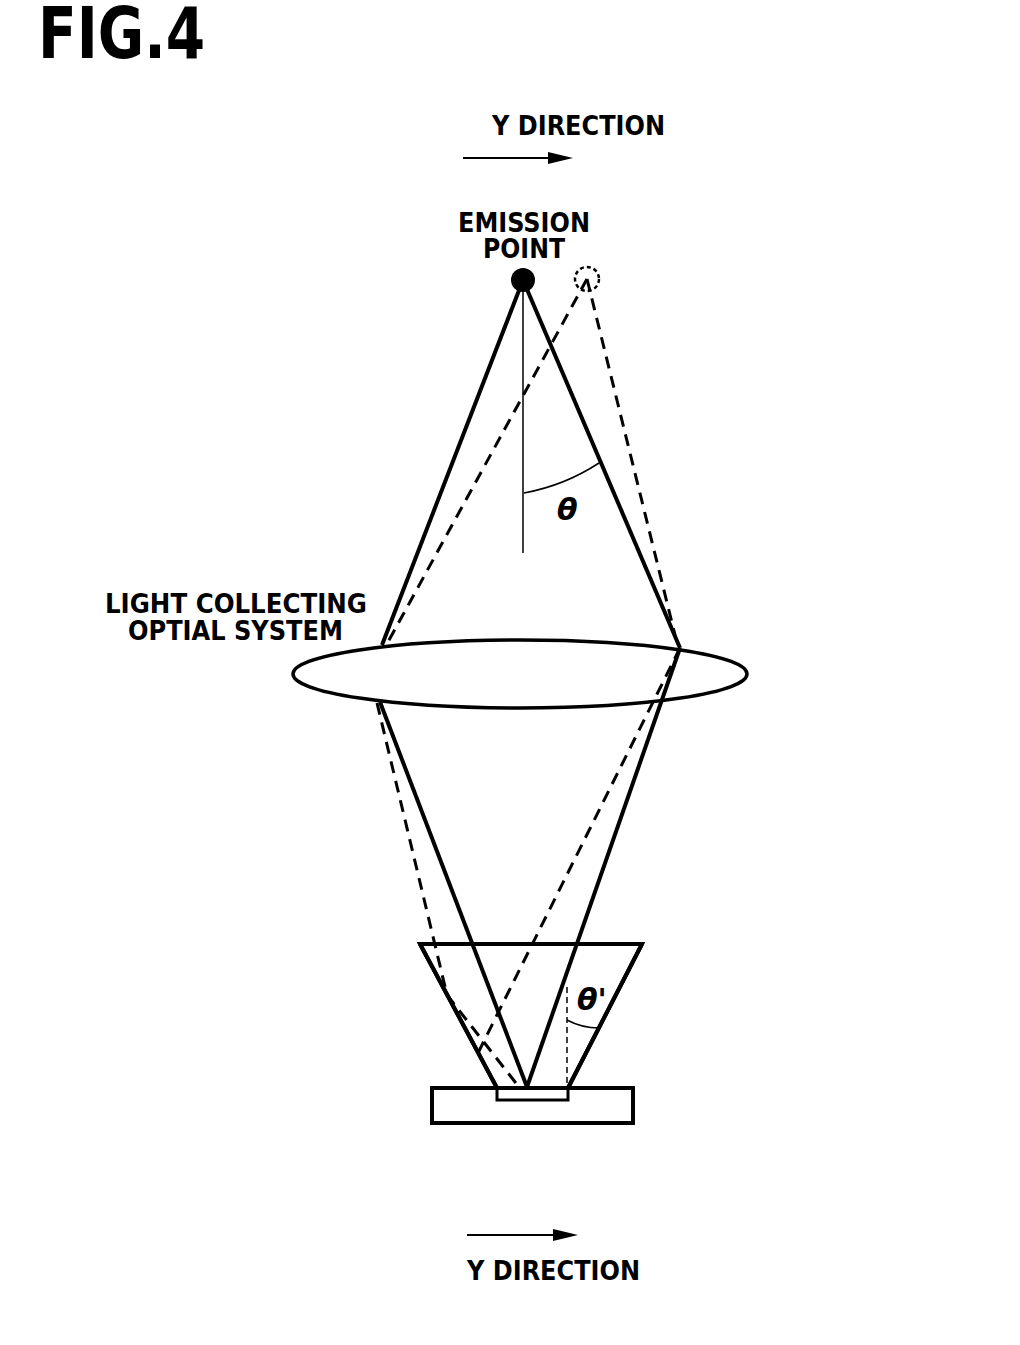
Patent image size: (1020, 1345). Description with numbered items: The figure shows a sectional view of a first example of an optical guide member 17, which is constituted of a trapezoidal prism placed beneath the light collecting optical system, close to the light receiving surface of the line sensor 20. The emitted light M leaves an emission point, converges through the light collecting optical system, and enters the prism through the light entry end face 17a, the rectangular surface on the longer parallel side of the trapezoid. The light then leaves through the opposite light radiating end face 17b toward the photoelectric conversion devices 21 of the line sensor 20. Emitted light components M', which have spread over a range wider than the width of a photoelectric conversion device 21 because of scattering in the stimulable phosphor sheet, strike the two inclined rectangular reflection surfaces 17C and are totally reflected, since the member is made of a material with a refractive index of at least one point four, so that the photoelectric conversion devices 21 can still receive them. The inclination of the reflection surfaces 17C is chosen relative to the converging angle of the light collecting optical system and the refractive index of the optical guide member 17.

The optical guide member 17 is at (617, 955).
The light entry end face 17a is at (453, 943).
The light radiating end face 17b is at (510, 1088).
The reflection surfaces 17C is at (442, 993).
The line sensor 20 is at (608, 1097).
The photoelectric conversion devices 21 is at (512, 1097).
The emitted light M is at (562, 683).
The emitted light components M' is at (549, 677).